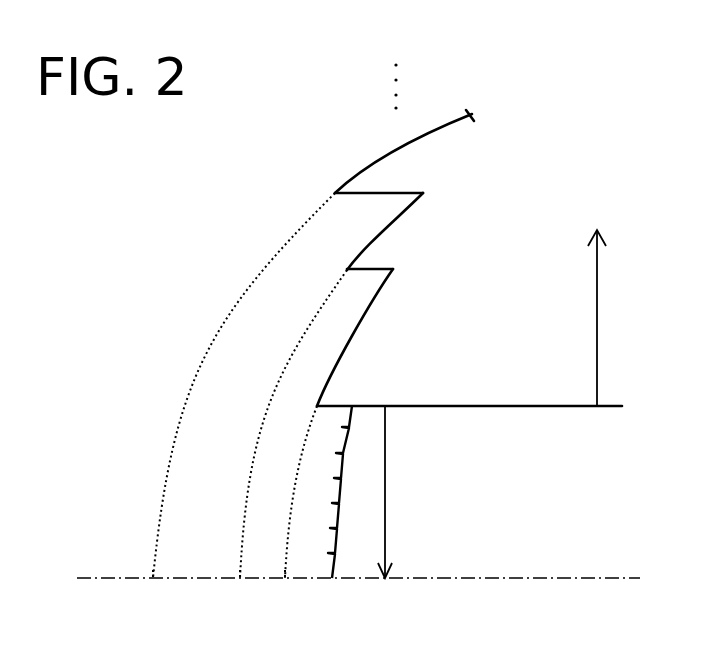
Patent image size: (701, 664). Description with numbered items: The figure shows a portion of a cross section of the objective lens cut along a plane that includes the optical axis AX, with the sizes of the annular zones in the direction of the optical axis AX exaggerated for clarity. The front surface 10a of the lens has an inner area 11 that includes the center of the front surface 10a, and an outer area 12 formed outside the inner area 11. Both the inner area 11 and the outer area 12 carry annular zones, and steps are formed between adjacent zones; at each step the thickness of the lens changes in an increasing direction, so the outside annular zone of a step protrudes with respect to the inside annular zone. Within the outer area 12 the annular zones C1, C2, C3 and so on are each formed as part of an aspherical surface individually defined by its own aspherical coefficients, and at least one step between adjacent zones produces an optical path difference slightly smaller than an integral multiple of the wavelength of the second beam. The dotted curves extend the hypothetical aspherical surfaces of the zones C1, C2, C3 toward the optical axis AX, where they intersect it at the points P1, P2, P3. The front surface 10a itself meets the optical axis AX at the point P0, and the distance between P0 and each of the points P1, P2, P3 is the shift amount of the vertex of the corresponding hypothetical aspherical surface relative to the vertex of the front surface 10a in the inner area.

The front surface 10a is at (330, 83).
The inner area 11 is at (385, 488).
The outer area 12 is at (597, 320).
The annular zone C1 is at (330, 372).
The annular zone C2 is at (362, 253).
The annular zone C3 is at (357, 176).
The intersection point of front surface and optical axis P0 is at (332, 578).
The intersection point of hypothetical aspherical surface with optical axis P1 is at (285, 579).
The intersection point of hypothetical aspherical surface with optical axis P2 is at (240, 579).
The intersection point of hypothetical aspherical surface with optical axis P3 is at (153, 579).
The optical axis AX is at (335, 577).